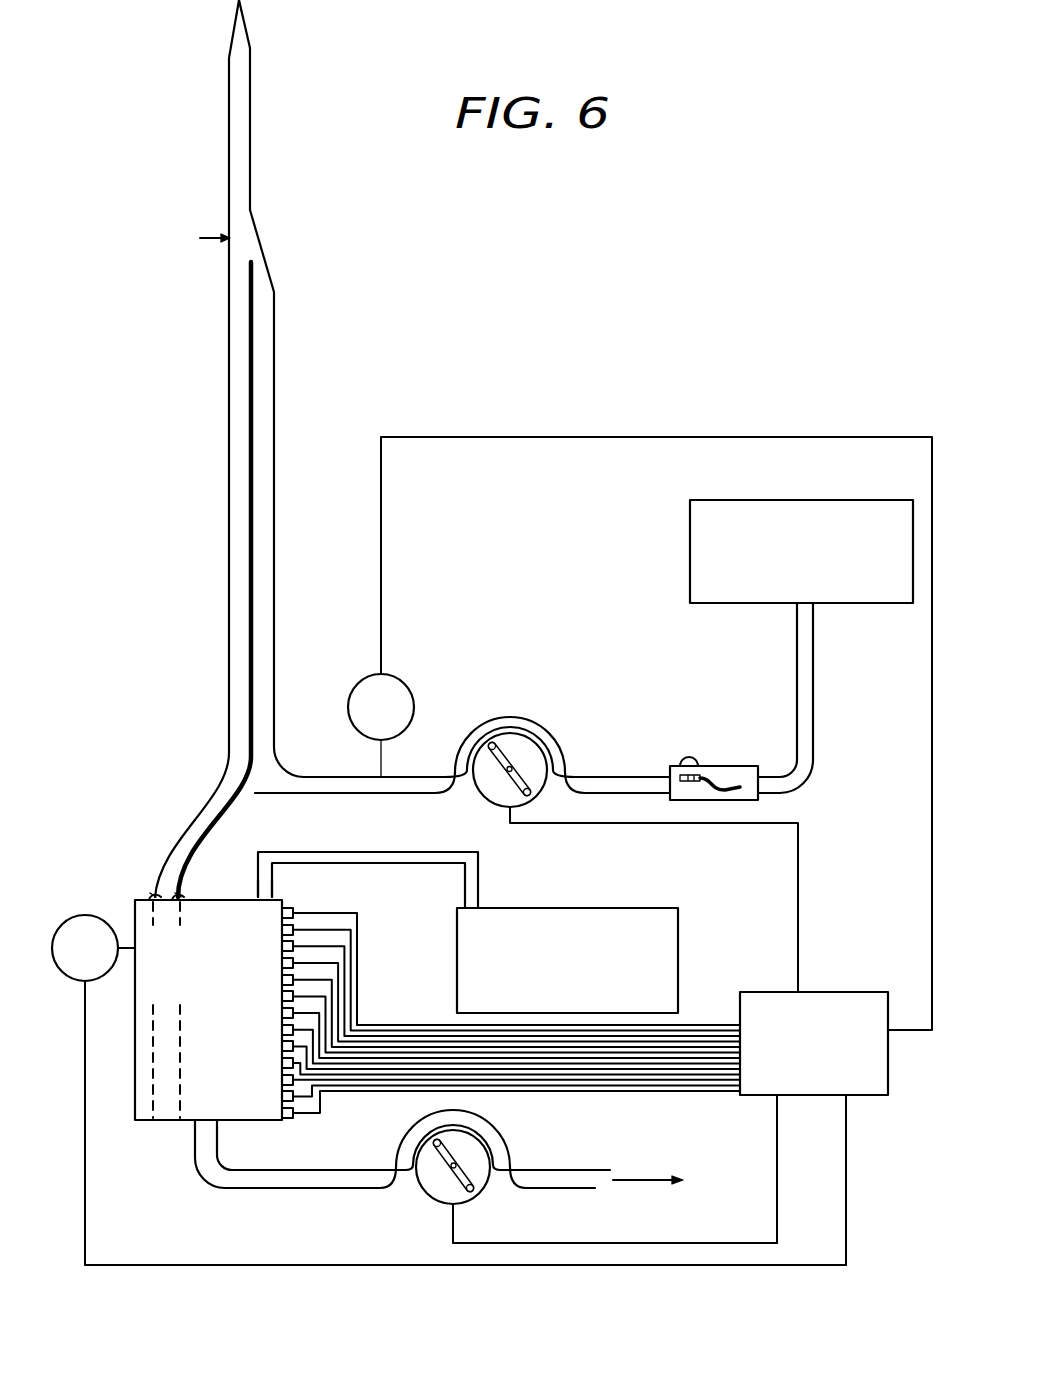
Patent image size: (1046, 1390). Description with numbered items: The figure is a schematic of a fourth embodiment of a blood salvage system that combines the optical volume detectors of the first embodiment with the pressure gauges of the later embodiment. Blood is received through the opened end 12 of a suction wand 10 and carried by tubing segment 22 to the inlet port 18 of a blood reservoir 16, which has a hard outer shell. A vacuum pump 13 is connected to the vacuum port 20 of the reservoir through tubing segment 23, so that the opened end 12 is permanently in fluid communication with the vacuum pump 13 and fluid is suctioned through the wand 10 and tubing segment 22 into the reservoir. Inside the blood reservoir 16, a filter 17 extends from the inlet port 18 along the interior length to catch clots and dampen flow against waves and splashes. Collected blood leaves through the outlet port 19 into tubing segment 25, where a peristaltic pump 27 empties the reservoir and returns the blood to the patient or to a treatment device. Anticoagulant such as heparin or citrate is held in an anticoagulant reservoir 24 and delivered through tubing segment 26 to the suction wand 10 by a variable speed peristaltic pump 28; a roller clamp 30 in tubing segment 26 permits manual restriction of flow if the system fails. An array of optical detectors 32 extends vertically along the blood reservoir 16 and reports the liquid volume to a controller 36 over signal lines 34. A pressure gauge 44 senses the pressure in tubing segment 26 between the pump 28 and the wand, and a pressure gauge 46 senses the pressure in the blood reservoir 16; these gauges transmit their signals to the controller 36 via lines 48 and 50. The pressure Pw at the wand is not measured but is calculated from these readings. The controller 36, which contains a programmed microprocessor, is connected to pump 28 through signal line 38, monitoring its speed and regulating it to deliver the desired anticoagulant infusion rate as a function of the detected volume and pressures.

The suction wand 10 is at (252, 98).
The opened end 12 is at (247, 3).
The pressure at the wand Pw is at (197, 243).
The tubing segment 22 is at (229, 467).
The tubing segment 26 is at (273, 408).
The variable speed peristaltic pump 28 is at (522, 748).
The roller clamp 30 is at (712, 766).
The anticoagulant reservoir 24 is at (830, 500).
The pressure gauge 44 is at (404, 684).
The line 48 is at (481, 438).
The tubing segment 23 is at (337, 852).
The vacuum port 20 is at (276, 900).
The vacuum pump 13 is at (596, 908).
The signal line 38 is at (799, 908).
The controller 36 is at (858, 992).
The blood reservoir 16 is at (251, 1041).
The filter 17 is at (182, 1087).
The inlet port 18 is at (151, 891).
The pressure gauge 46 is at (80, 915).
The line 50 is at (87, 1145).
The optical detectors 32 is at (296, 978).
The signal lines 34 is at (537, 1097).
The outlet port 19 is at (220, 1122).
The tubing segment 25 is at (333, 1170).
The peristaltic pump 27 is at (438, 1180).